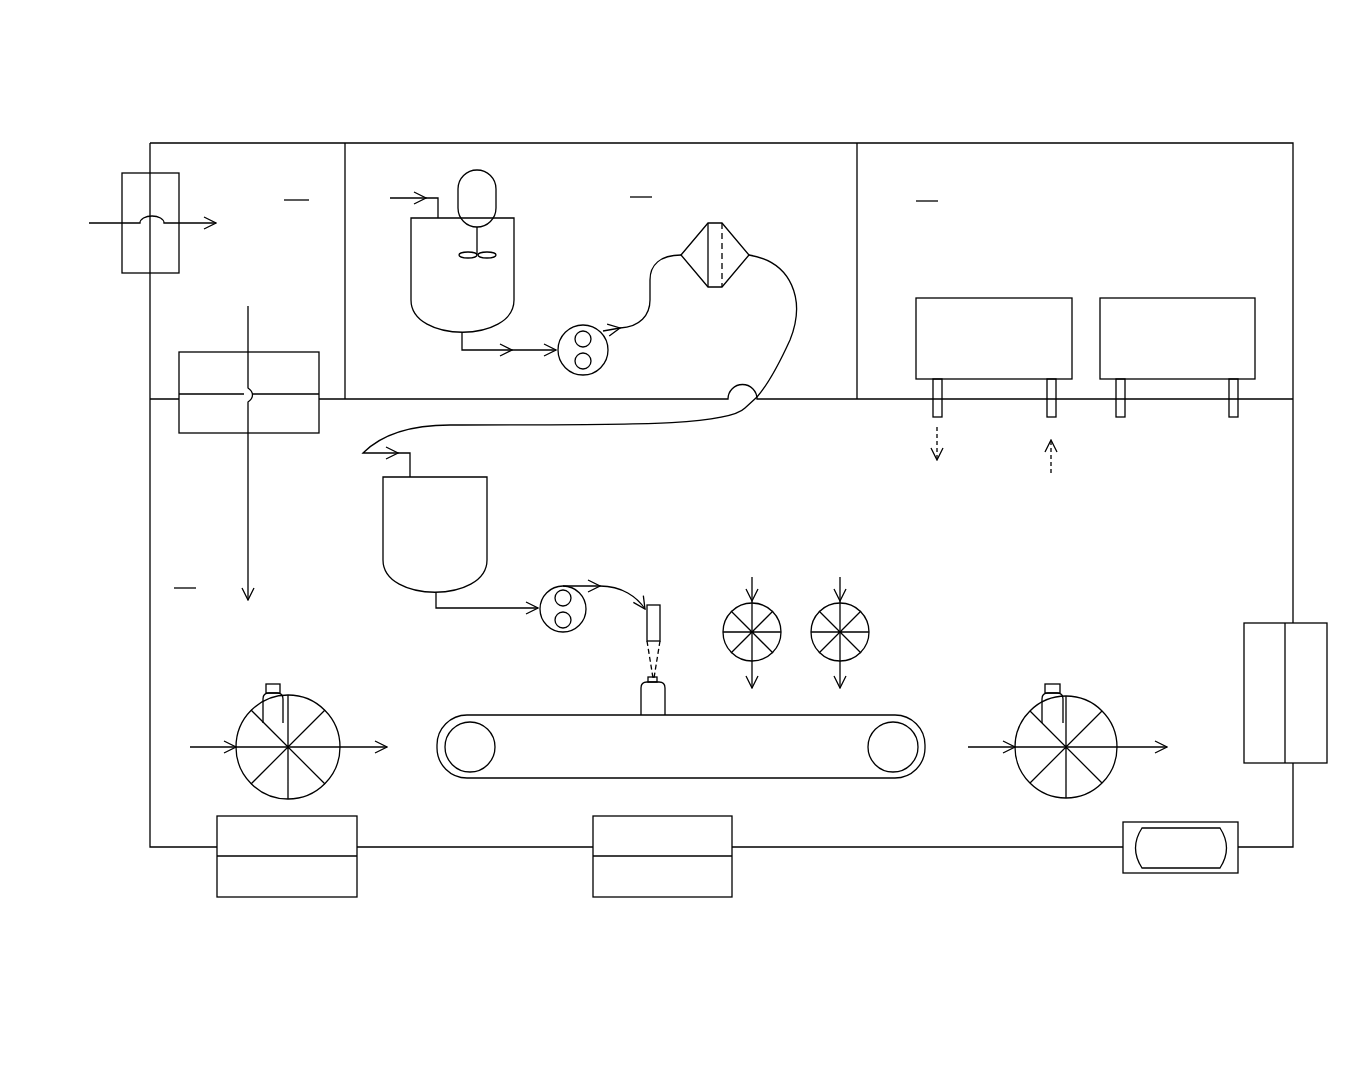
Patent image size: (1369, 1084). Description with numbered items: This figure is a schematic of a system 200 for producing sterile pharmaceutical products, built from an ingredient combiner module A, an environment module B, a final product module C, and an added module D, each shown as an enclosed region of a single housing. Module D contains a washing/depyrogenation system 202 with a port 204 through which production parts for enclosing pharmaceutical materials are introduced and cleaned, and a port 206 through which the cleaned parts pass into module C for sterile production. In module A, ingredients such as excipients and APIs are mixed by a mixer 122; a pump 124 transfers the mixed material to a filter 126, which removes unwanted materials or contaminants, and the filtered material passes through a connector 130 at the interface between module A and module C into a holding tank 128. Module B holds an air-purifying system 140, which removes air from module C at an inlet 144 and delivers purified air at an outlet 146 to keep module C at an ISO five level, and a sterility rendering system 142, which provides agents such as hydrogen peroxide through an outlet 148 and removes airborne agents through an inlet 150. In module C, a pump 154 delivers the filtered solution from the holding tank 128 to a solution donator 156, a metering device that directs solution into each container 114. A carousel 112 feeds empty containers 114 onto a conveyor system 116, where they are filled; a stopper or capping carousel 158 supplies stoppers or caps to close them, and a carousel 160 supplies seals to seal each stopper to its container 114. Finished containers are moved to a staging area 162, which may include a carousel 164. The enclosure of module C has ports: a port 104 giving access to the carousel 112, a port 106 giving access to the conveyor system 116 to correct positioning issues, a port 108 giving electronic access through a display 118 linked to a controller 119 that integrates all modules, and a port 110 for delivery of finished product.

The system 200 is at (97, 160).
The washing/depyrogenation system 202 is at (245, 165).
The port 204 is at (133, 251).
The port 206 is at (193, 413).
The mixer 122 is at (480, 195).
The pump 124 is at (583, 322).
The filter 126 is at (745, 231).
The connector 130 is at (765, 394).
The air-purifying system 140 is at (993, 313).
The sterility rendering system 142 is at (1174, 313).
The inlet 144 is at (1046, 408).
The outlet 146 is at (933, 408).
The outlet 148 is at (1231, 408).
The inlet 150 is at (1123, 408).
The holding tank 128 is at (398, 525).
The pump 154 is at (561, 586).
The solution donator 156 is at (652, 605).
The container 114 is at (276, 686).
The carousel 112 is at (338, 711).
The conveyor system 116 is at (553, 781).
The stopper or capping carousel 158 is at (777, 615).
The carousel 160 is at (862, 615).
The staging area 162 is at (1078, 680).
The carousel 164 is at (1110, 718).
The port 110 is at (1315, 612).
The port 104 is at (209, 881).
The port 106 is at (585, 881).
The port 108 is at (1129, 875).
The display 118 is at (1183, 855).
The controller 119 is at (1240, 858).